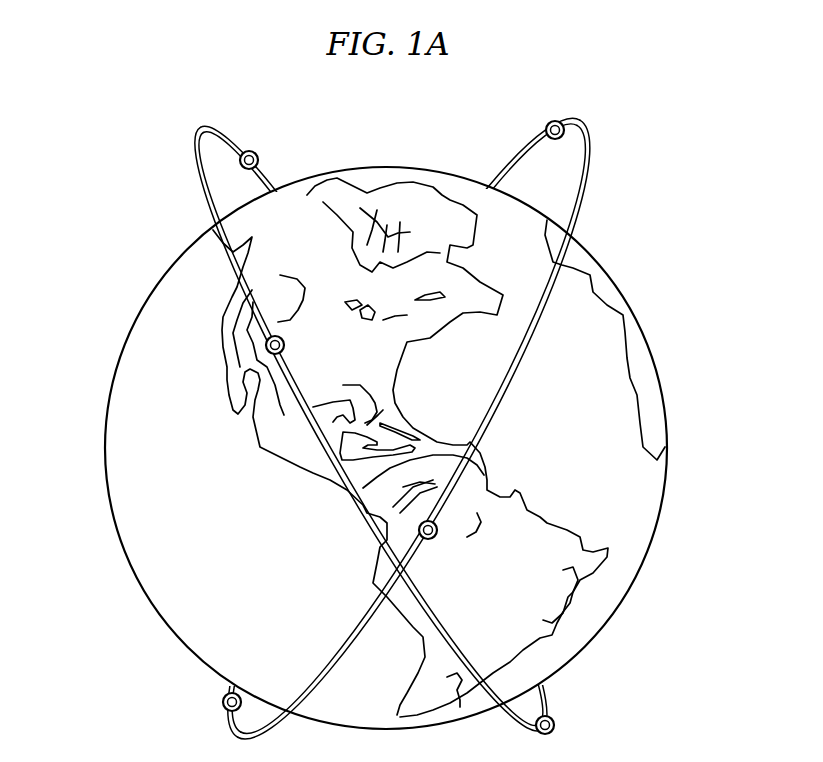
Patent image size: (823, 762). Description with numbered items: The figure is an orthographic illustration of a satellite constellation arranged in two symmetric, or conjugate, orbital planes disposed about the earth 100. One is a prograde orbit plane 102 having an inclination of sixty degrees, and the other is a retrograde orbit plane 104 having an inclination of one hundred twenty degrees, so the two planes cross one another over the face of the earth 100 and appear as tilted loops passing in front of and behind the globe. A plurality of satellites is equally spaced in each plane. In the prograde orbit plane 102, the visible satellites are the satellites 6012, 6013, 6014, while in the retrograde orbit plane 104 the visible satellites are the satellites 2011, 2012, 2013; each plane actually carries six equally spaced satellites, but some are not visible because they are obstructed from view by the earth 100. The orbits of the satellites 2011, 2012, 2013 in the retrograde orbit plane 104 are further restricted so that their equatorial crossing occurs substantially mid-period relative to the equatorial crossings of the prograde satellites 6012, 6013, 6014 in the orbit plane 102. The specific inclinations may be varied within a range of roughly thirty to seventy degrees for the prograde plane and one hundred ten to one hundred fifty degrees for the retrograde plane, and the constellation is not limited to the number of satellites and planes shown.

The earth 100 is at (648, 341).
The prograde orbit plane 102 is at (589, 168).
The retrograde orbit plane 104 is at (197, 133).
The satellite 2011 is at (256, 152).
The satellite 2012 is at (266, 345).
The satellite 2013 is at (552, 720).
The satellite 6012 is at (560, 122).
The satellite 6013 is at (437, 534).
The satellite 6014 is at (223, 703).